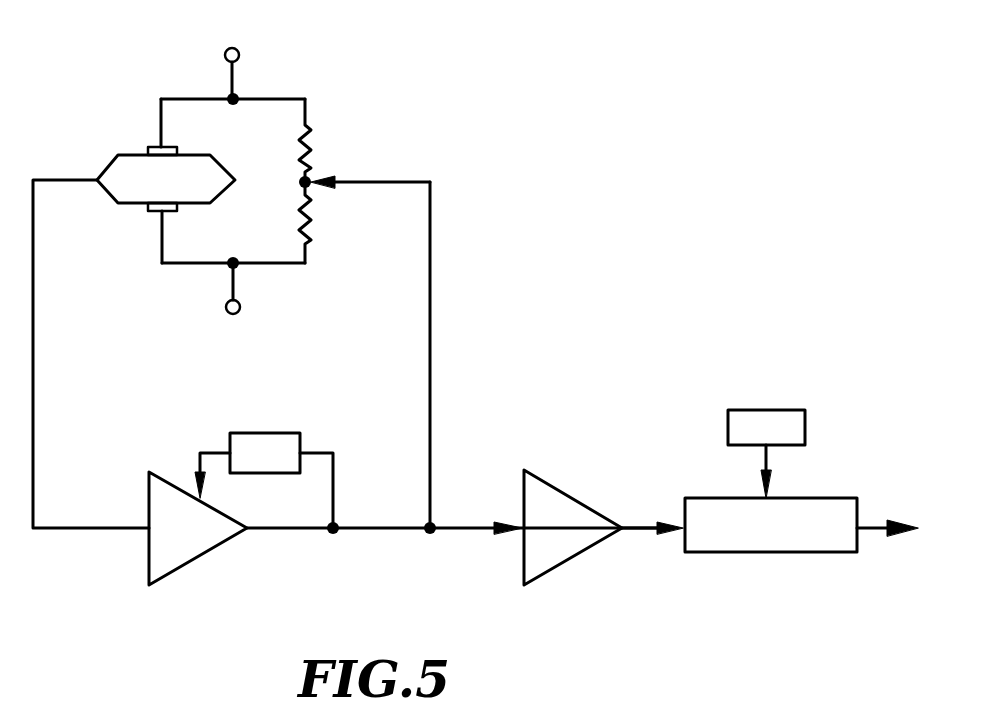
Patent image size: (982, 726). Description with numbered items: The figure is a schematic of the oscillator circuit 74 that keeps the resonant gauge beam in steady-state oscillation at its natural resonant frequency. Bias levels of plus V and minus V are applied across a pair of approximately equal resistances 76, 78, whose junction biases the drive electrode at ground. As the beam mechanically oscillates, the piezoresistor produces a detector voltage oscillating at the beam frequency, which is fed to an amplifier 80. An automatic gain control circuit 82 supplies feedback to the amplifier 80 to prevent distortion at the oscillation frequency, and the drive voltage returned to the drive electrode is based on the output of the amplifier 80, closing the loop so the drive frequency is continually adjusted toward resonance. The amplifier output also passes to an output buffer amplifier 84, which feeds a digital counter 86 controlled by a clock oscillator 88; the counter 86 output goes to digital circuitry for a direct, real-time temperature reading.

The oscillator circuit 74 is at (468, 193).
The resistance 76 is at (313, 146).
The resistance 78 is at (313, 222).
The amplifier 80 is at (154, 497).
The automatic gain control circuit 82 is at (277, 433).
The output buffer amplifier 84 is at (578, 501).
The digital counter 86 is at (770, 548).
The clock oscillator 88 is at (763, 411).